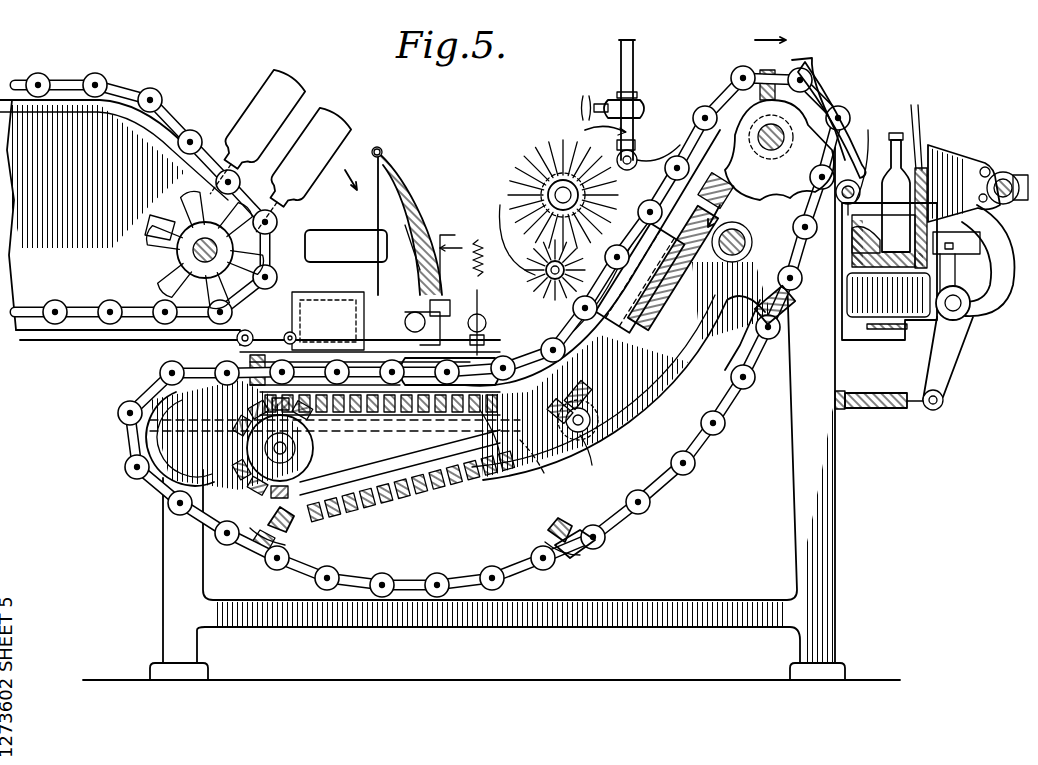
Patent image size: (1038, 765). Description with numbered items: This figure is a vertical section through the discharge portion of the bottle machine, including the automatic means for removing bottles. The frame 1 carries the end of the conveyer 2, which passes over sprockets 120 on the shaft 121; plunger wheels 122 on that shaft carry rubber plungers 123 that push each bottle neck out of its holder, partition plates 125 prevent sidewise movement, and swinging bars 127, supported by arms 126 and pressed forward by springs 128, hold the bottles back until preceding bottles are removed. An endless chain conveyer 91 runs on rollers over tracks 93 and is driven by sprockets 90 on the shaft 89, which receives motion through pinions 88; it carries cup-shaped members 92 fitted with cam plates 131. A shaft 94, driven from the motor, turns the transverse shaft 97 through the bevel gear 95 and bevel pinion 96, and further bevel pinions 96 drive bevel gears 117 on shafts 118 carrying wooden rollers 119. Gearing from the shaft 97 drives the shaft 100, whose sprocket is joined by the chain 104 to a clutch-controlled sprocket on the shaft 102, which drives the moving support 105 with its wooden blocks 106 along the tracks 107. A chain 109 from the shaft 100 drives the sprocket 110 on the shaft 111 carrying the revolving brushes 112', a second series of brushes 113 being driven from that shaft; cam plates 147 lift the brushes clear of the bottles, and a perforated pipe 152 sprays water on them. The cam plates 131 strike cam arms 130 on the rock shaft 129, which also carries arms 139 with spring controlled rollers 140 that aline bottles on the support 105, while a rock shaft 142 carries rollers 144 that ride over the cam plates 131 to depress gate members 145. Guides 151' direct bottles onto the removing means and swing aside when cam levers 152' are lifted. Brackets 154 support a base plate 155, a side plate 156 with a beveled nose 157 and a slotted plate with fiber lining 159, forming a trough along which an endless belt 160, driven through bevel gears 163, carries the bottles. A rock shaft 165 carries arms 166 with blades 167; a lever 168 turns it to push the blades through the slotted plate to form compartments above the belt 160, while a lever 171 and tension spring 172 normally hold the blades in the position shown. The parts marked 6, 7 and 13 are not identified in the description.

The frame 1 is at (163, 550).
The conveyer 2 is at (125, 93).
The adjusting spring 6 is at (290, 382).
The bottle 7 is at (300, 112).
The carrier link 13 is at (578, 556).
The pinion 88 is at (752, 240).
The shaft 89 is at (768, 152).
The sprocket 90 is at (825, 92).
The endless chain conveyer 91 is at (468, 331).
The cup-shaped member 92 is at (265, 520).
The track 93 is at (150, 447).
The shaft 94 is at (135, 425).
The bevel gear 95 is at (548, 462).
The bevel pinion 96 is at (595, 432).
The shaft 97 is at (597, 458).
The shaft 100 is at (503, 462).
The shaft 102 is at (272, 458).
The chain 104 is at (373, 457).
The chain conveyer or moving support 105 is at (345, 495).
The block 106 is at (395, 476).
The track 107 is at (445, 470).
The chain 109 is at (504, 238).
The sprocket 110 is at (551, 178).
The shaft 111 is at (560, 175).
The revolving brush 112' is at (547, 178).
The revolving brush 113 is at (540, 268).
The bevel gear 117 is at (595, 418).
The shaft 118 is at (720, 365).
The roller 119 is at (688, 284).
The sprocket 120 is at (178, 243).
The shaft 121 is at (193, 255).
The plunger wheel 122 is at (190, 225).
The plunger 123 is at (150, 222).
The partition plate 125 is at (328, 312).
The arm 126 is at (402, 221).
The swinging bar 127 is at (380, 218).
The spring 128 is at (415, 235).
The rock shaft 129 is at (405, 318).
The cam arm 130 is at (428, 338).
The cam plate 131 is at (800, 36).
The arm 139 is at (458, 322).
The spring controlled roller 140 is at (457, 342).
The rock shaft 142 is at (370, 355).
The roller 144 is at (238, 342).
The gate member 145 is at (450, 373).
The cam plate 147 is at (794, 305).
The guide 151' is at (876, 154).
The perforated pipe 152 is at (631, 133).
The cam lever 152' is at (829, 104).
The bracket 154 is at (860, 338).
The base plate 155 is at (900, 262).
The side plate 156 is at (852, 182).
The beveled nose 157 is at (870, 232).
The lining 159 is at (913, 110).
The endless belt 160 is at (895, 330).
The bevel gear 163 is at (634, 56).
The rock shaft 165 is at (962, 308).
The arm 166 is at (979, 260).
The blade 167 is at (975, 153).
The lever 168 is at (922, 168).
The lever 171 is at (952, 355).
The tension spring 172 is at (880, 408).